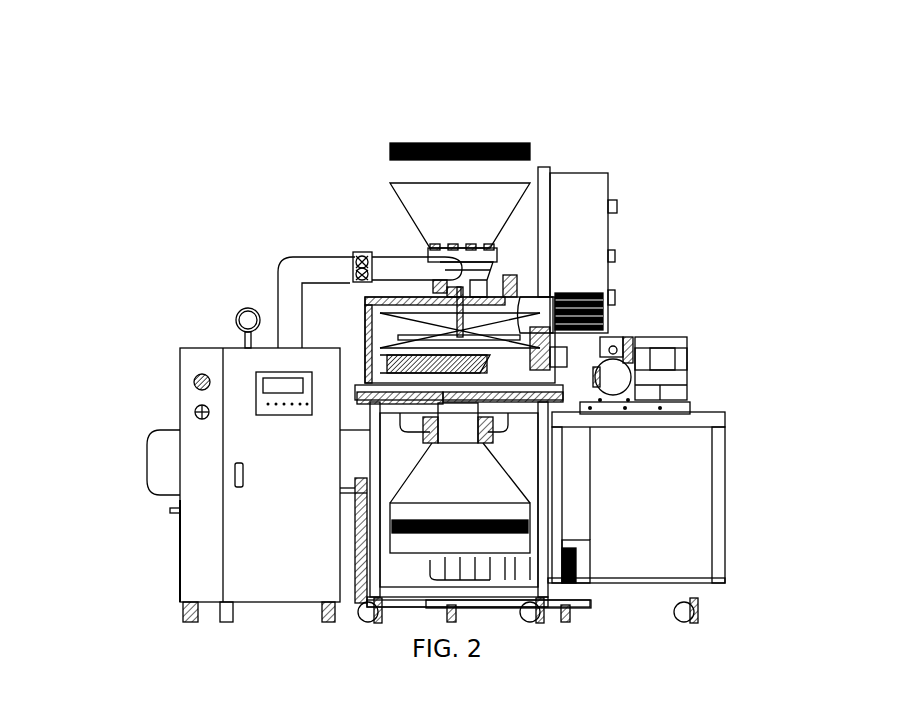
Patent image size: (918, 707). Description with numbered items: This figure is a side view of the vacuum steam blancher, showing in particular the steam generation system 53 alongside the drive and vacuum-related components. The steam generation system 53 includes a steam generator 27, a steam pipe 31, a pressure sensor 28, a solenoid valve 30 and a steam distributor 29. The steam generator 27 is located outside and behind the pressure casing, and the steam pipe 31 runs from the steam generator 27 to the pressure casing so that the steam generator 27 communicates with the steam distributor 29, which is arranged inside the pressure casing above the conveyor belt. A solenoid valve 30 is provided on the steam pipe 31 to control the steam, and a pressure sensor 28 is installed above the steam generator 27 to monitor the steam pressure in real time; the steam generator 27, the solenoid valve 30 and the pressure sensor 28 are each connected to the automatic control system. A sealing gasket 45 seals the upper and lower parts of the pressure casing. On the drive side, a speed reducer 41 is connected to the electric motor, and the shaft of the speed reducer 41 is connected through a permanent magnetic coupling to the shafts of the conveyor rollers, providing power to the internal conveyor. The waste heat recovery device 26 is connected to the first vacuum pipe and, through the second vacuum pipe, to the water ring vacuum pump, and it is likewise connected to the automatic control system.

The waste heat recovery device 26 is at (152, 449).
The steam generator 27 is at (285, 438).
The pressure sensor 28 is at (238, 312).
The steam distributor 29 is at (413, 333).
The solenoid valve 30 is at (356, 253).
The steam pipe 31 is at (465, 296).
The speed reducer 41 is at (614, 350).
The sealing gasket 45 is at (447, 348).
The steam generation system 53 is at (180, 552).